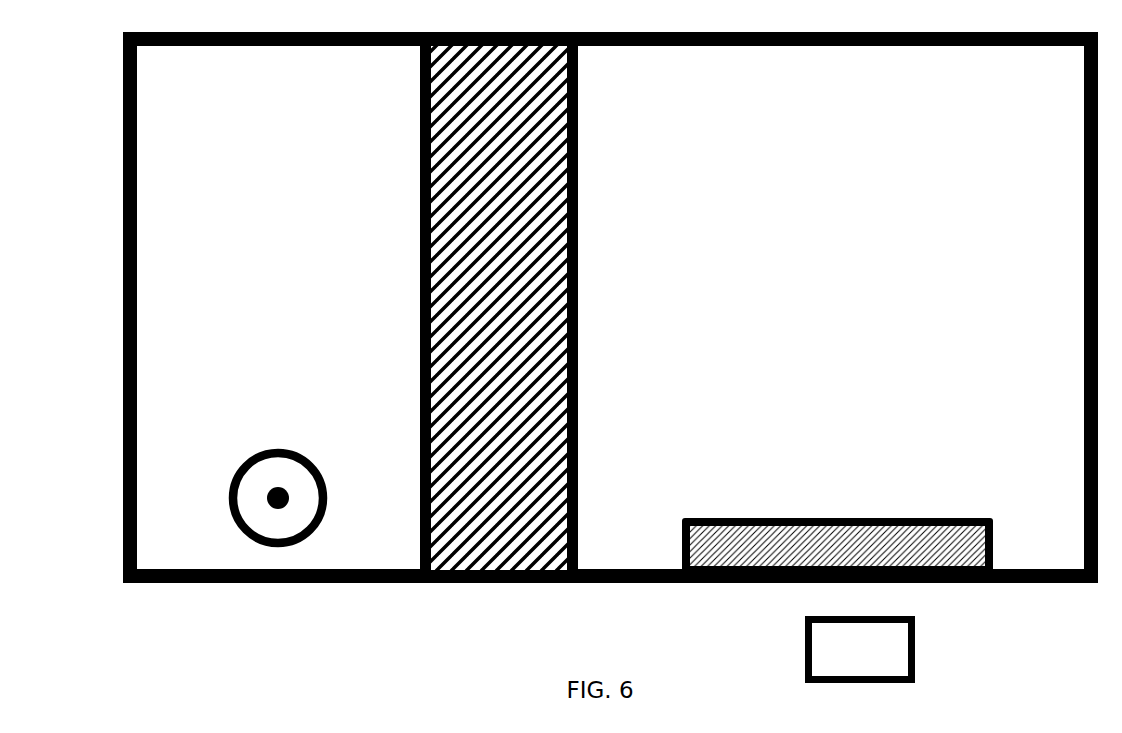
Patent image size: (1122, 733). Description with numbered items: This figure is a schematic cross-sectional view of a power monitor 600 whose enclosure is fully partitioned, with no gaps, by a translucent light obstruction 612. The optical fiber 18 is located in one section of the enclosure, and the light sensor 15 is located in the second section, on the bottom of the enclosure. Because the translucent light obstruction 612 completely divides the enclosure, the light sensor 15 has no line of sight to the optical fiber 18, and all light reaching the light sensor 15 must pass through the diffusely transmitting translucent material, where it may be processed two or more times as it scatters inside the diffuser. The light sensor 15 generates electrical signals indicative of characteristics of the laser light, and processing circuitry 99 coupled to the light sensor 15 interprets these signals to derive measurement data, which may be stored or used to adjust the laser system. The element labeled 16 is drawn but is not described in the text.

The power monitor 600 is at (264, 664).
The translucent light obstruction 612 is at (501, 570).
The antenna element 16 is at (760, 519).
The light sensor 15 is at (910, 547).
The optical fiber 18 is at (202, 452).
The processing circuitry 99 is at (845, 563).